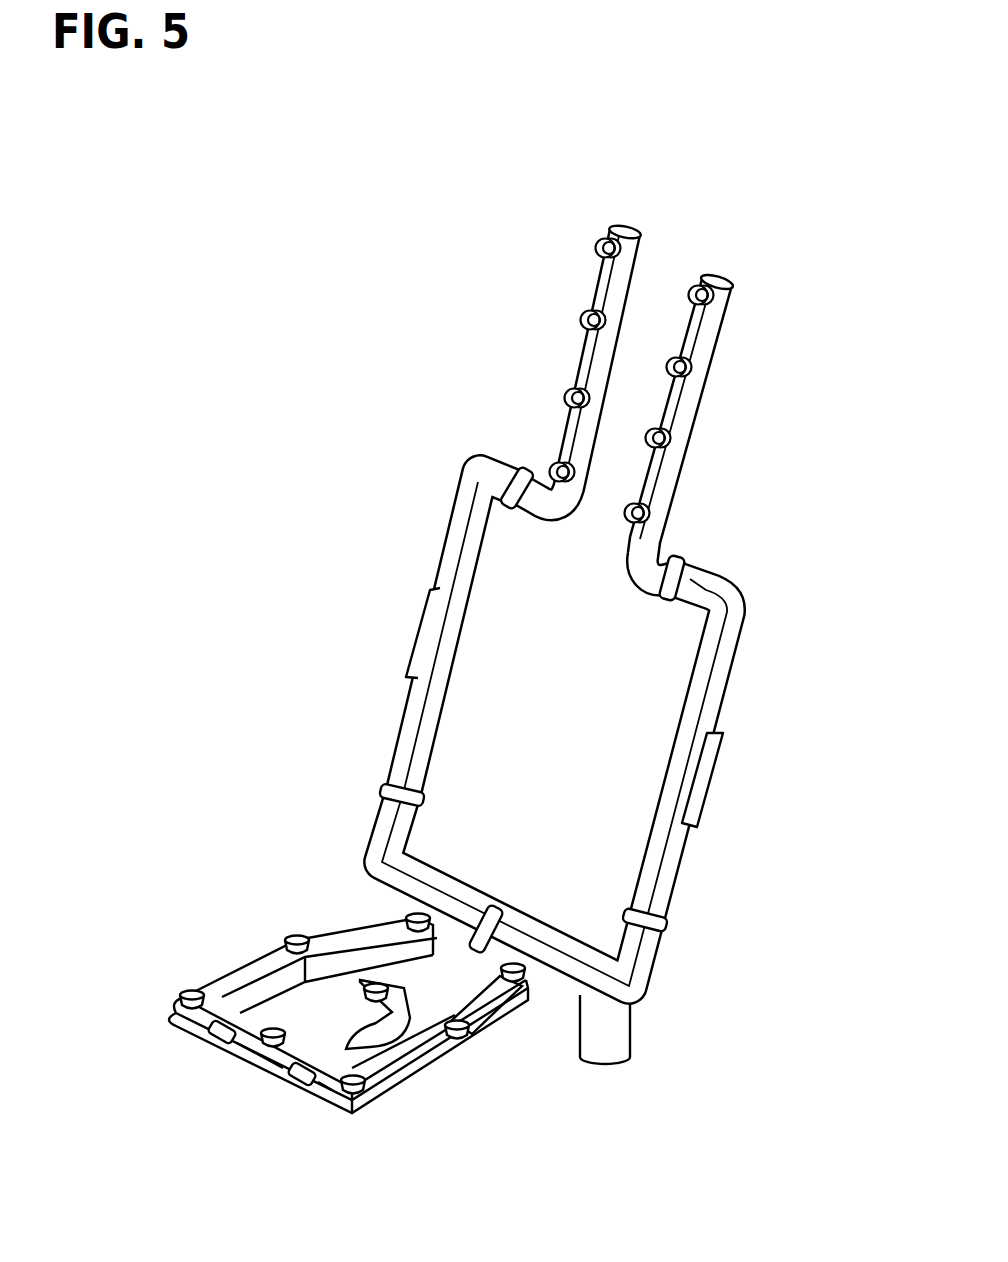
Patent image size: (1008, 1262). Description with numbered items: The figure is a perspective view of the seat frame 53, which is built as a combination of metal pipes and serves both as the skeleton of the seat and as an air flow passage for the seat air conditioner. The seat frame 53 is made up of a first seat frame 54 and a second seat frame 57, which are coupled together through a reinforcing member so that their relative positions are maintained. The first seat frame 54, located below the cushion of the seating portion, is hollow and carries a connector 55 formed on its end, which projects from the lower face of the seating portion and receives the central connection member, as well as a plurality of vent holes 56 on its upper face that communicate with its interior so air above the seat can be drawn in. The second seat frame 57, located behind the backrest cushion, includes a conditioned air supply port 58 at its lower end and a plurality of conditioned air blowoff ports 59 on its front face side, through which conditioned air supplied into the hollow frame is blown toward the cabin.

The seat frame 53 is at (316, 302).
The first seat frame 54 is at (329, 998).
The connector 55 is at (393, 1045).
The vent holes 56 is at (298, 935).
The second seat frame 57 is at (748, 565).
The conditioned air supply port 58 is at (617, 1032).
The conditioned air blowoff ports 59 is at (596, 320).